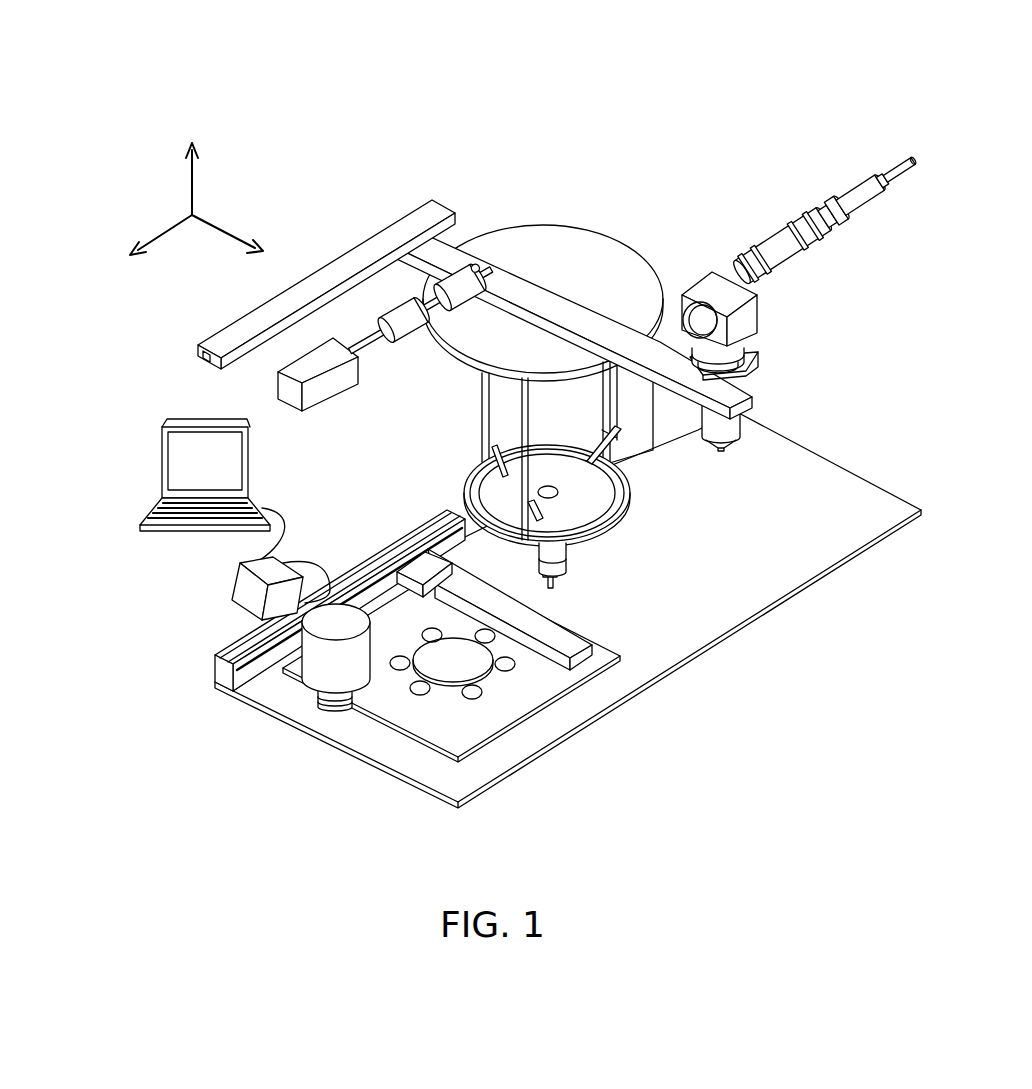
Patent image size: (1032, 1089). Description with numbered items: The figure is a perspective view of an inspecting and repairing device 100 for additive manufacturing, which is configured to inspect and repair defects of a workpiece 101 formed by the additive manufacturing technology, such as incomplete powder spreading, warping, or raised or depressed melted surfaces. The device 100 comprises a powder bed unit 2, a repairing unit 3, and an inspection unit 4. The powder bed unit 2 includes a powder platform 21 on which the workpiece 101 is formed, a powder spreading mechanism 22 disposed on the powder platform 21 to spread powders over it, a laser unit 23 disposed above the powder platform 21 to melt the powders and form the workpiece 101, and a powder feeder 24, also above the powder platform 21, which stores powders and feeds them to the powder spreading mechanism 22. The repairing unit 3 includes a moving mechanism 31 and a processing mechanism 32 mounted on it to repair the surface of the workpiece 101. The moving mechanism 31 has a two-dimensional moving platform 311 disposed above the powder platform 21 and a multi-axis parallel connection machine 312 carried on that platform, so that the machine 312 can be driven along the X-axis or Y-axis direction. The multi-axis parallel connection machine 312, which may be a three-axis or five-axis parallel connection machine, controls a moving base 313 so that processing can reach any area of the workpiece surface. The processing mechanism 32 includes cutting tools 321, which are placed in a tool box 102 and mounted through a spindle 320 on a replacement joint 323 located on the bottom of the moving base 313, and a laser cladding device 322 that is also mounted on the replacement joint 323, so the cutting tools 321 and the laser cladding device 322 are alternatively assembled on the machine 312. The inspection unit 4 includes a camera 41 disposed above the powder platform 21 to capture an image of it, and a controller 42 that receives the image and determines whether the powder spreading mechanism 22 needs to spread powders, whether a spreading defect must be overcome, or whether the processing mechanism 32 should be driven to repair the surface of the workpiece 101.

The inspecting and repairing device 100 is at (474, 468).
The powder bed unit 2 is at (418, 798).
The powder platform 21 is at (451, 691).
The powder spreading mechanism 22 is at (380, 560).
The laser unit 23 is at (334, 388).
The powder feeder 24 is at (322, 686).
The workpiece 101 is at (441, 689).
The repairing unit 3 is at (560, 385).
The moving mechanism 31 is at (542, 385).
The two-dimensional moving platform 311 is at (326, 232).
The multi-axis parallel connection machine 312 is at (505, 226).
The moving base 313 is at (494, 476).
The processing mechanism 32 is at (712, 566).
The spindle 320 is at (550, 587).
The cutting tools 321 is at (562, 578).
The laser cladding device 322 is at (724, 452).
The replacement joint 323 is at (540, 545).
The tool box 102 is at (672, 308).
The inspection unit 4 is at (177, 519).
The camera 41 is at (244, 587).
The controller 42 is at (144, 525).